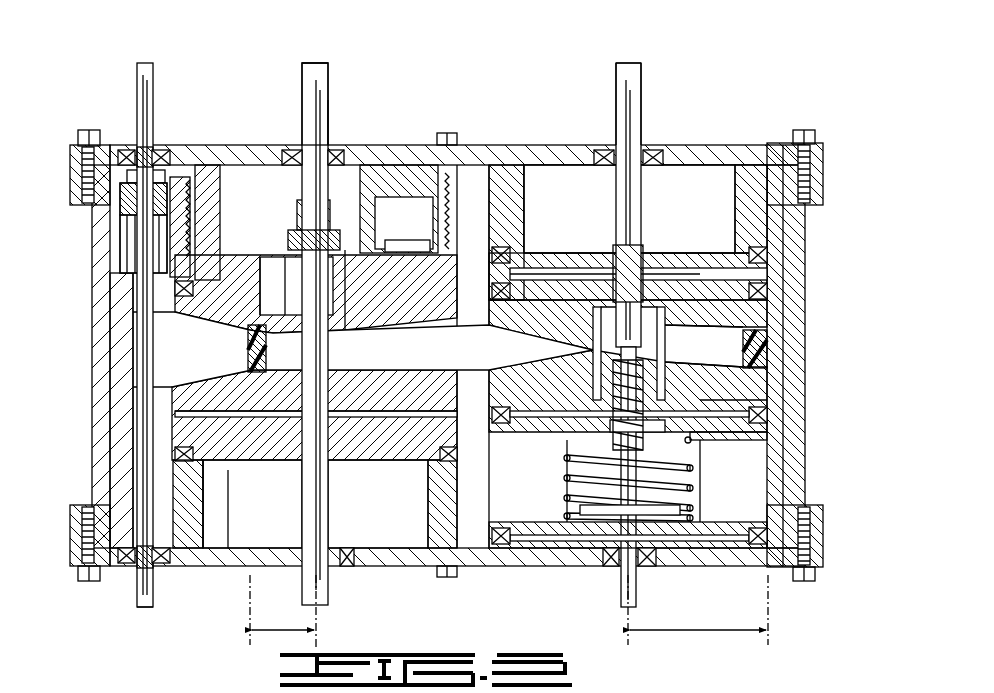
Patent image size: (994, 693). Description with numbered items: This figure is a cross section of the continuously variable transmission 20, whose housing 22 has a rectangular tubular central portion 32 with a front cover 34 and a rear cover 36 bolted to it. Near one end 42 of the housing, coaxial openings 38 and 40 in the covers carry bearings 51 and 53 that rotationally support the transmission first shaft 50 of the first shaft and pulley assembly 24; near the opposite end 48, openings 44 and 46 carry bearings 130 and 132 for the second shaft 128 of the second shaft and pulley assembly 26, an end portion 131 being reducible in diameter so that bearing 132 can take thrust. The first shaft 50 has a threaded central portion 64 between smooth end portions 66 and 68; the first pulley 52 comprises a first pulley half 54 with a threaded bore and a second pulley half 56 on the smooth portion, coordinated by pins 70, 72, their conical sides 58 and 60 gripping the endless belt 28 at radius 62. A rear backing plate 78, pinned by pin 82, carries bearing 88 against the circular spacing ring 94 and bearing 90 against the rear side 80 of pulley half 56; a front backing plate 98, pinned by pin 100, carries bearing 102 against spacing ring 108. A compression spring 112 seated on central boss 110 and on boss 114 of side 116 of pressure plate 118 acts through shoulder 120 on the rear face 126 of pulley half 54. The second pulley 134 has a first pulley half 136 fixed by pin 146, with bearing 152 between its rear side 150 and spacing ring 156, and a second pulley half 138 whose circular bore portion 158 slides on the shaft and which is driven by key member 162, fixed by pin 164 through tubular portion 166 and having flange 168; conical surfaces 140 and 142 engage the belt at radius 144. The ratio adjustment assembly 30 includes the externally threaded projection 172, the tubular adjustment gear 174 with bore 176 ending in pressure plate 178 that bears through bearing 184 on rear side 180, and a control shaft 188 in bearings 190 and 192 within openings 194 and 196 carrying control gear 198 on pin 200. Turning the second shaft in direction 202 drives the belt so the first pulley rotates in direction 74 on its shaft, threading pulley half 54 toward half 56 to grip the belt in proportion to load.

The continuously variable transmission 20 is at (695, 106).
The housing 22 is at (428, 146).
The first shaft and pulley assembly 24 is at (660, 246).
The second shaft and pulley assembly 26 is at (366, 236).
The endless belt 28 is at (147, 346).
The ratio adjustment assembly 30 is at (456, 212).
The central portion 32 is at (140, 396).
The front cover 34 is at (262, 560).
The rear cover 36 is at (216, 166).
The opening 38 is at (603, 562).
The opening 40 is at (651, 152).
The end of the housing 42 is at (792, 366).
The opening 44 is at (346, 562).
The opening 46 is at (336, 192).
The opposite end of the housing 48 is at (197, 378).
The transmission first shaft 50 is at (648, 82).
The bearing 51 is at (648, 562).
The first pulley 52 is at (778, 318).
The bearing 53 is at (603, 150).
The first pulley half 54 is at (737, 392).
The second pulley half 56 is at (730, 292).
The conical side 58 is at (737, 362).
The conical side 60 is at (752, 352).
The radius 62 is at (690, 632).
The threaded central portion 64 is at (642, 432).
The smooth end portion 66 is at (612, 112).
The smooth end portion 68 is at (620, 590).
The pin 70 is at (702, 342).
The pin 72 is at (668, 322).
The direction of rotation 74 is at (633, 82).
The rear backing plate 78 is at (722, 252).
The rear side 80 is at (702, 278).
The pin 82 is at (690, 254).
The bearing 88 is at (736, 262).
The bearing 90 is at (742, 332).
The circular spacing ring 94 is at (758, 196).
The front backing plate 98 is at (541, 527).
The pin 100 is at (694, 508).
The bearing 102 is at (492, 538).
The spacing ring 108 is at (518, 542).
The central boss 110 is at (666, 508).
The compression spring 112 is at (694, 492).
The boss 114 is at (692, 462).
The side of the pressure plate 116 is at (738, 432).
The pressure plate 118 is at (738, 419).
The circumferentially extending shoulder 120 is at (722, 416).
The rear face 126 is at (722, 442).
The second shaft 128 is at (332, 532).
The bearing 130 is at (293, 566).
The end portion 131 is at (319, 62).
The bearing 132 is at (292, 158).
The second pulley 134 is at (176, 432).
The first pulley half 136 is at (176, 452).
The second pulley half 138 is at (446, 196).
The conical surface 140 is at (177, 406).
The conical surface 142 is at (200, 322).
The radius 144 is at (282, 632).
The pin 146 is at (362, 458).
The rear side 150 is at (229, 462).
The bearing 152 is at (206, 505).
The spacing ring 156 is at (192, 512).
The circular portion 158 is at (328, 140).
The key member 162 is at (356, 247).
The pin 164 is at (300, 212).
The tubular portion 166 is at (300, 232).
The flange 168 is at (260, 217).
The externally threaded projection 172 is at (196, 216).
The tubular adjustment gear 174 is at (456, 276).
The bore 176 is at (200, 230).
The pressure plate 178 is at (224, 252).
The rear side 180 is at (386, 242).
The bearing 184 is at (176, 290).
The control shaft 188 is at (84, 366).
The bearing 190 is at (145, 580).
The bearing 192 is at (140, 150).
The opening 194 is at (128, 566).
The opening 196 is at (128, 154).
The control gear 198 is at (132, 242).
The pin 200 is at (125, 202).
The direction of rotation 202 is at (306, 76).